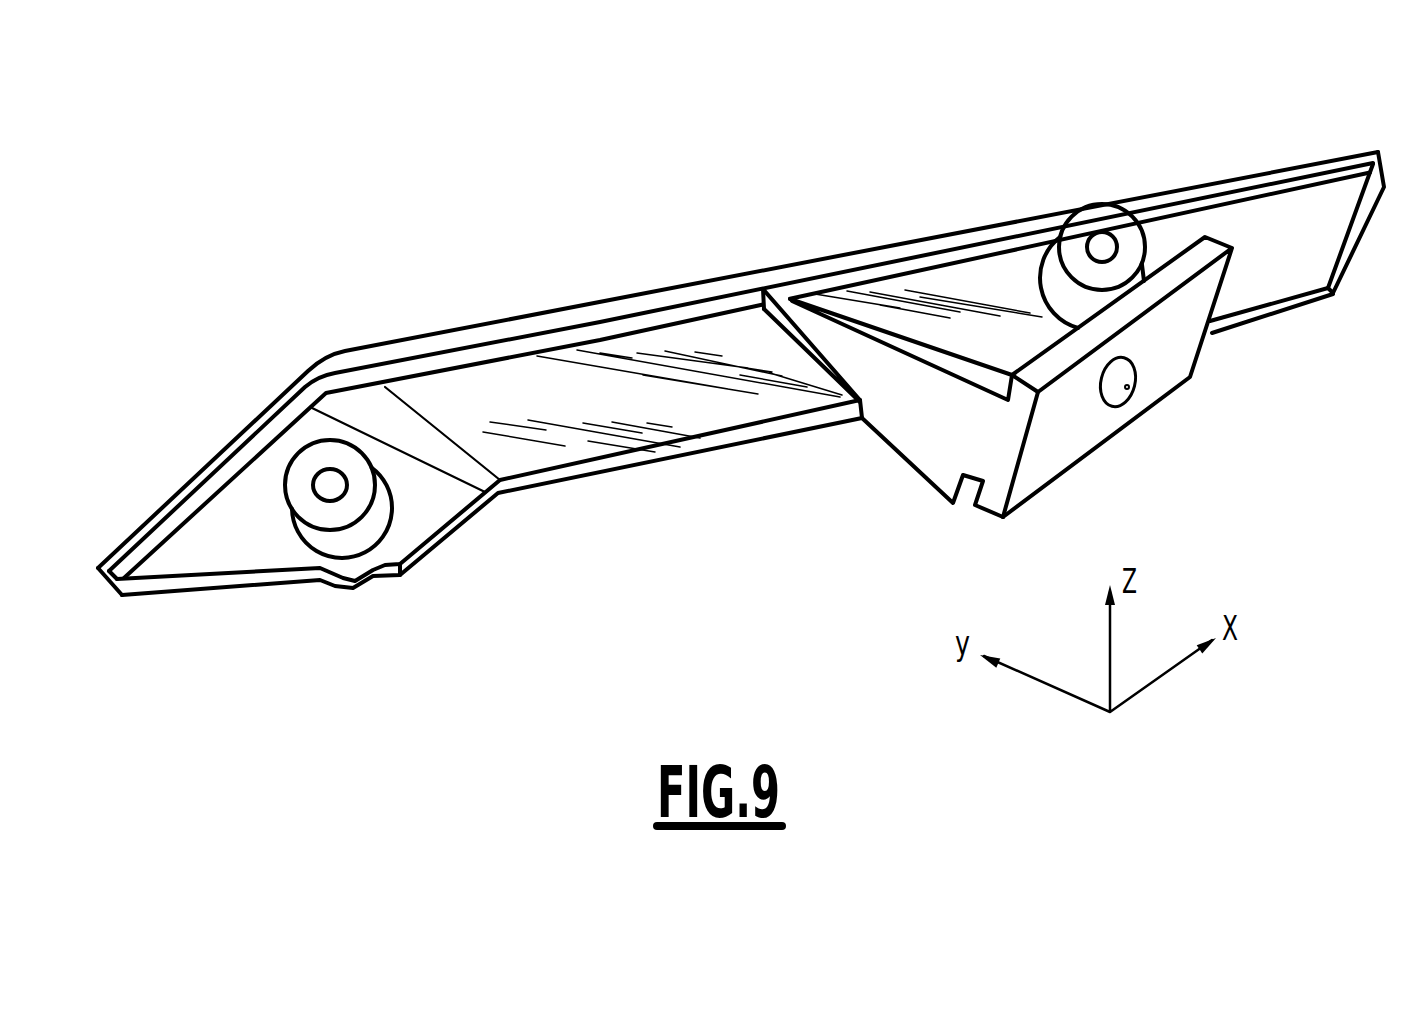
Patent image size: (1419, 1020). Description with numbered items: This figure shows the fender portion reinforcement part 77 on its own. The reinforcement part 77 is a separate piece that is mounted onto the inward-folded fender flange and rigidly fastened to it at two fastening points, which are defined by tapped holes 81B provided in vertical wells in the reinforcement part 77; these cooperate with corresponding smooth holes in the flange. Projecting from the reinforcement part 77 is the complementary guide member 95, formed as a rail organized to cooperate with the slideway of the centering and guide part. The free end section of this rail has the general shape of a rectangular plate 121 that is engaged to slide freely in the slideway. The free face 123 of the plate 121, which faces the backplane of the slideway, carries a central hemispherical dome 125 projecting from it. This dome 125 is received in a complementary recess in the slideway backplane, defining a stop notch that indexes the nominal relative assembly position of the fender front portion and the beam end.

The reinforcement part 77 is at (752, 182).
The tapped holes 81B is at (327, 487).
The complementary guide member 95 is at (930, 448).
The rectangular plate 121 is at (1003, 448).
The free face 123 is at (1178, 358).
The hemispherical dome 125 is at (1113, 393).